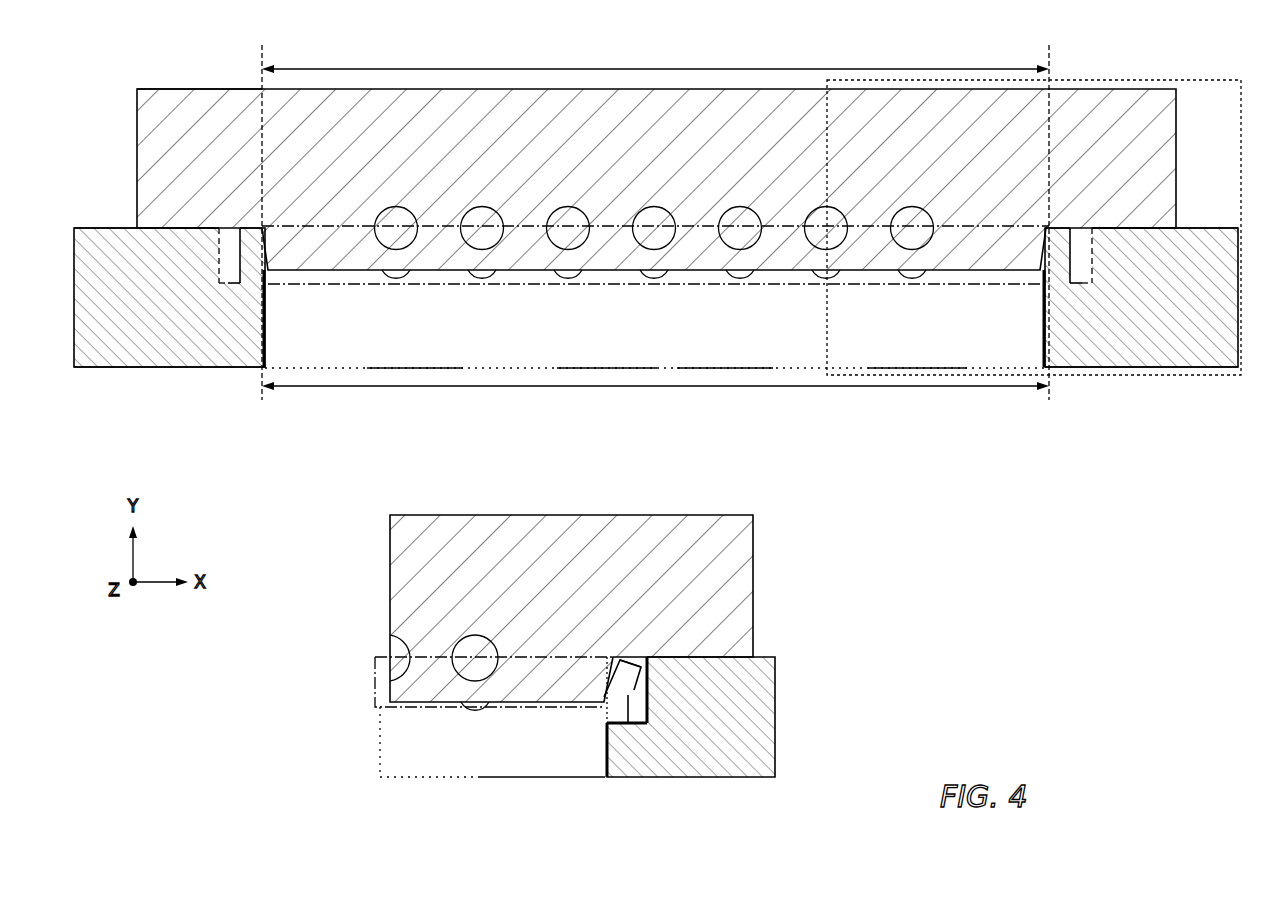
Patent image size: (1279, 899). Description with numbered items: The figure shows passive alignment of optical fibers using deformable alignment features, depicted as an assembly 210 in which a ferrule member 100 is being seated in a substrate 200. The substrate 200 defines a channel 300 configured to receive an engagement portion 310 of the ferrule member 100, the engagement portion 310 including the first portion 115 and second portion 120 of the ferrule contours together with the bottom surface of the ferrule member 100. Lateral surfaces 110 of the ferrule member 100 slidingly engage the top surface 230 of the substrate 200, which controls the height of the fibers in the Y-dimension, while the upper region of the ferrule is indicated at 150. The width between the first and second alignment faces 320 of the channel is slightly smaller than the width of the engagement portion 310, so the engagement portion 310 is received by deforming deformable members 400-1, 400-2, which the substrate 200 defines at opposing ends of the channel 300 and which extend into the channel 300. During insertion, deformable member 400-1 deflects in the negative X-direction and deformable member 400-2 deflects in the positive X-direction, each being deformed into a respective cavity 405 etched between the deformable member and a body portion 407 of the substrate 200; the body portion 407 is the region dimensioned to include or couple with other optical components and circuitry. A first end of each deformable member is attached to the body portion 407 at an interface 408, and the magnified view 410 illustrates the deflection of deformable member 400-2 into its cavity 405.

The ferrule member 100 is at (1096, 89).
The lateral surfaces 110 is at (1150, 228).
The first portion 115 is at (604, 697).
The second portion 120 is at (600, 712).
The housing top surface 150 is at (180, 89).
The substrate 200 is at (91, 353).
The assembly 210 is at (957, 52).
The top surface 230 is at (171, 228).
The channel 300 is at (629, 335).
The engagement portion 310 is at (906, 286).
The alignment faces 320 is at (264, 338).
The deformable member 400-1 is at (250, 273).
The deformable member 400-2 is at (1070, 287).
The cavity 405 is at (224, 279).
The body portion 407 is at (107, 306).
The interface 408 is at (250, 288).
The magnified view 410 is at (1205, 80).